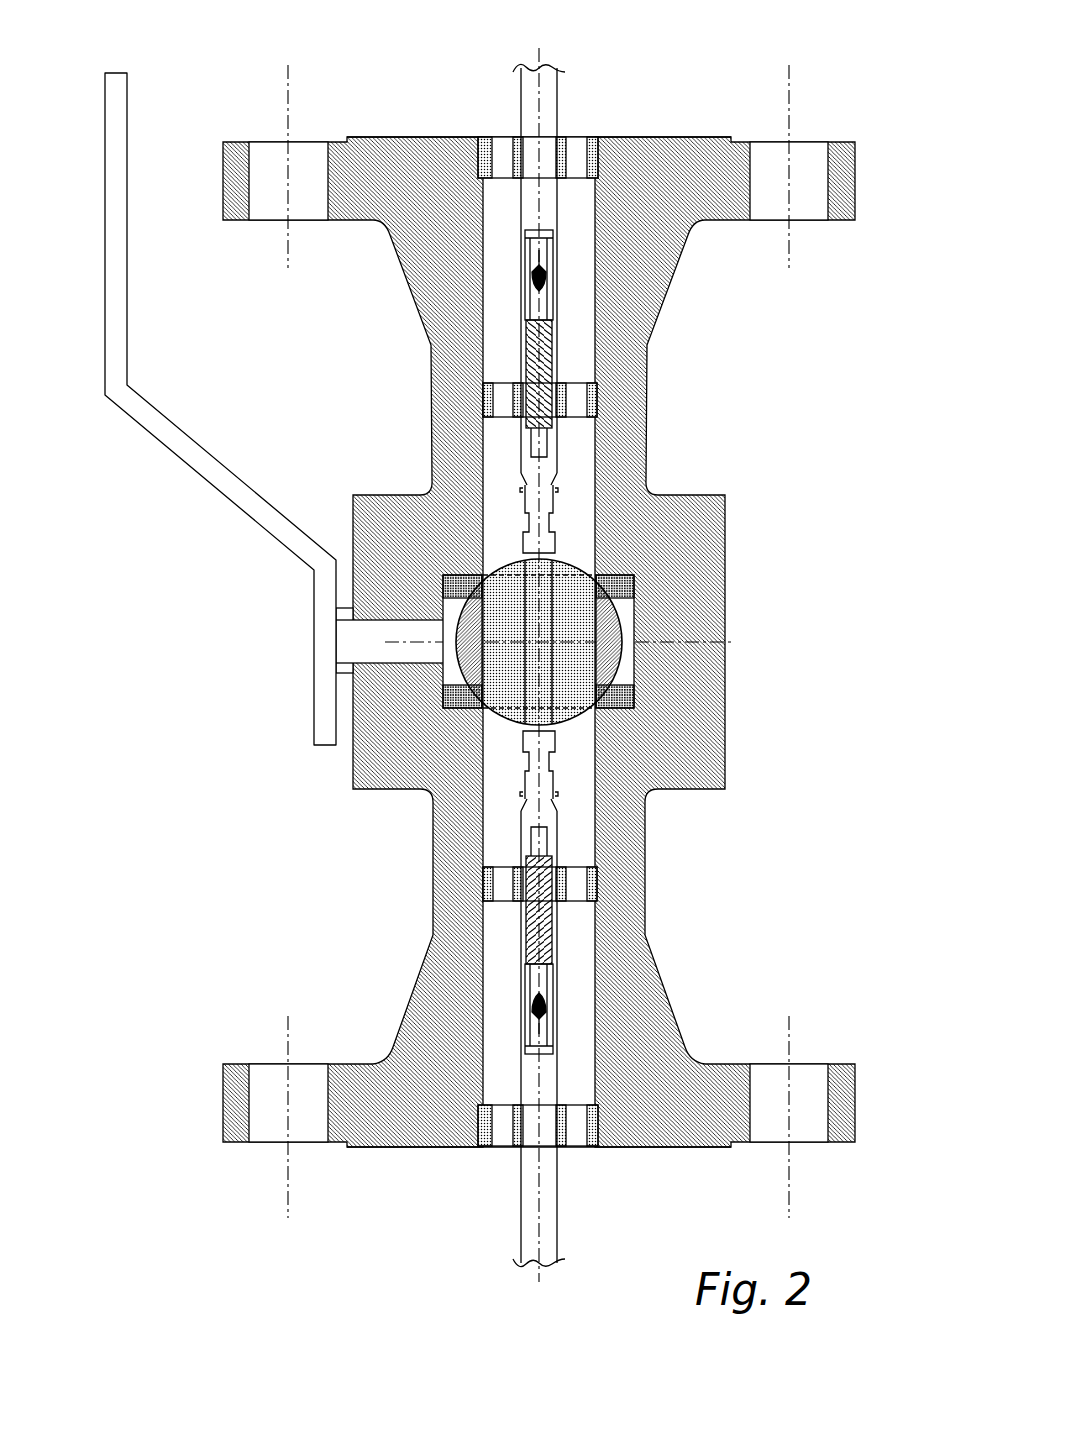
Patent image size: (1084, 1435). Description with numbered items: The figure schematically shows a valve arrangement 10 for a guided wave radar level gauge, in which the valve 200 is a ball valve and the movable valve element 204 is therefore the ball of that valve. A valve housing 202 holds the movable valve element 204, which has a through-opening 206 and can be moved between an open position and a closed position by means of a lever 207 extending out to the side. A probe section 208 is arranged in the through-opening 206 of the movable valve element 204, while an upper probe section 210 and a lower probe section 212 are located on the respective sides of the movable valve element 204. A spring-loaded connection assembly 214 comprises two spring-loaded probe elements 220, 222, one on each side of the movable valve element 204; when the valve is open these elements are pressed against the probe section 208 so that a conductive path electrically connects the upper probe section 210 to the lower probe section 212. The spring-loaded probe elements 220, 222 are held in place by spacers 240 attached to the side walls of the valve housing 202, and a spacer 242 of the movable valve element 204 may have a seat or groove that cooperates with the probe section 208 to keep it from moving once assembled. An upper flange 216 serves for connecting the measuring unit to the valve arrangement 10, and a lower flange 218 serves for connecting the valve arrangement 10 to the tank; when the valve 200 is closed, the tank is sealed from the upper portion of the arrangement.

The valve arrangement 10 is at (843, 80).
The valve 200 is at (583, 722).
The valve housing 202 is at (383, 520).
The movable valve element 204 is at (623, 617).
The through-opening 206 is at (537, 603).
The lever 207 is at (237, 510).
The probe section 208 is at (558, 688).
The upper probe section 210 is at (557, 200).
The lower probe section 212 is at (556, 1085).
The spring-loaded connection assembly 214 is at (503, 465).
The upper flange 216 is at (692, 137).
The lower flange 218 is at (677, 1147).
The spring-loaded probe element 220 is at (545, 447).
The spring-loaded probe element 222 is at (557, 1002).
The spacer 240 is at (497, 400).
The spacer 242 is at (447, 682).